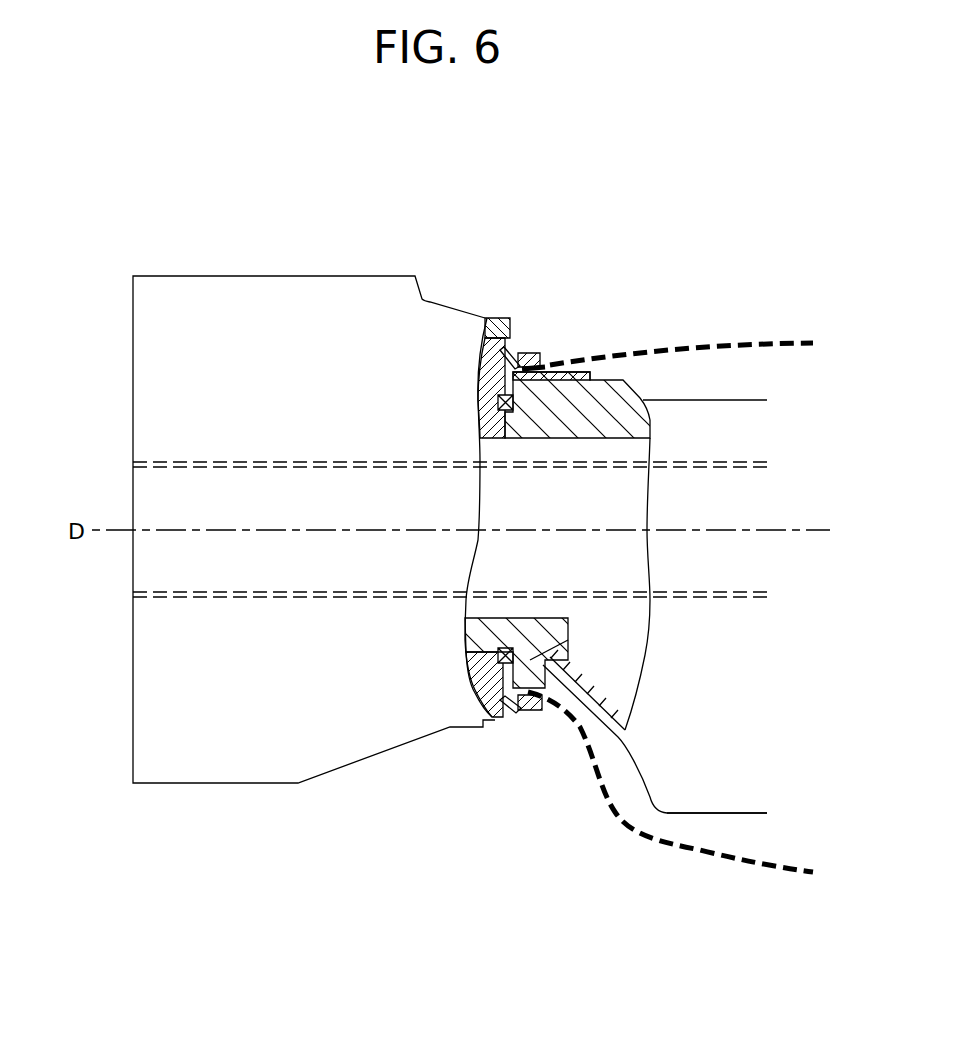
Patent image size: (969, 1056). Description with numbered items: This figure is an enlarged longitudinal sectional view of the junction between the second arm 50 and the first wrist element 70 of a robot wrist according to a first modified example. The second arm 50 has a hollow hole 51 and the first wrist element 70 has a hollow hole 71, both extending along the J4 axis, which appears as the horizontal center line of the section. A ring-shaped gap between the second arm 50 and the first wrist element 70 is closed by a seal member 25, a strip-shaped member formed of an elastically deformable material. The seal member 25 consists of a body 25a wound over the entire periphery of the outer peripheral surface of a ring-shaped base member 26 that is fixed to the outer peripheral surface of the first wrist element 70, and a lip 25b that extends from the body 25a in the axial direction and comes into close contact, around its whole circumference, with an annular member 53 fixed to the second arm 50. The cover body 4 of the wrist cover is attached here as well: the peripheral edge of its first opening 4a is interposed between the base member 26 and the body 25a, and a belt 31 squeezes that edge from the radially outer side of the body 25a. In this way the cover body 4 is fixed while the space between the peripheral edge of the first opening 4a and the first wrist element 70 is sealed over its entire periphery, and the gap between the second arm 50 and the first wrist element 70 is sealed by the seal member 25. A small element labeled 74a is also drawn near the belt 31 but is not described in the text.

The cover body 4 is at (773, 880).
The first opening 4a is at (542, 368).
The seal member 25 is at (580, 681).
The body 25a is at (533, 660).
The lip 25b is at (508, 713).
The base member 26 is at (590, 378).
The belt 31 is at (528, 712).
The second arm 50 is at (211, 783).
The hollow hole 51 is at (237, 465).
The annular member 53 is at (487, 683).
The first wrist element 70 is at (685, 815).
The hollow hole 71 is at (722, 458).
The seal block 74a is at (519, 350).